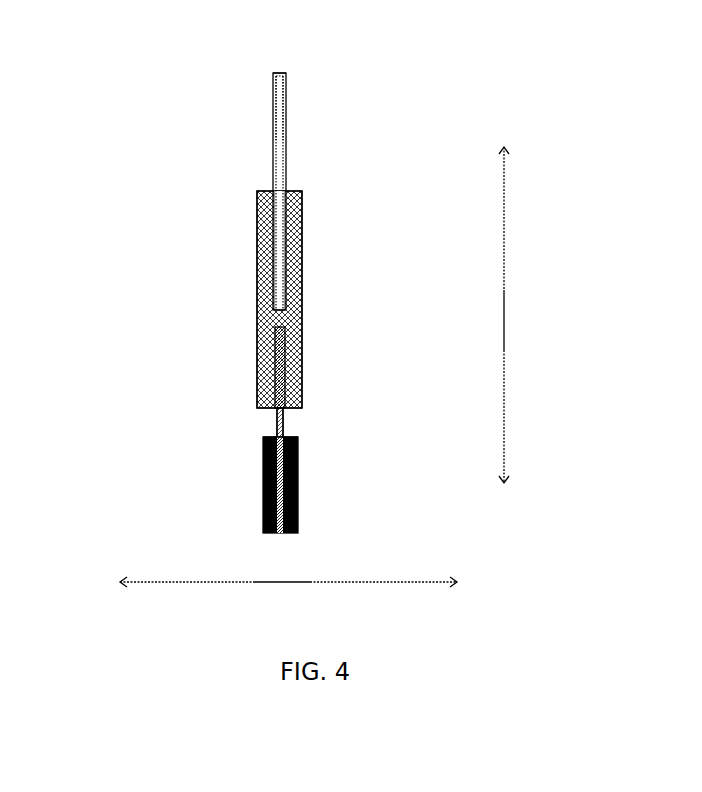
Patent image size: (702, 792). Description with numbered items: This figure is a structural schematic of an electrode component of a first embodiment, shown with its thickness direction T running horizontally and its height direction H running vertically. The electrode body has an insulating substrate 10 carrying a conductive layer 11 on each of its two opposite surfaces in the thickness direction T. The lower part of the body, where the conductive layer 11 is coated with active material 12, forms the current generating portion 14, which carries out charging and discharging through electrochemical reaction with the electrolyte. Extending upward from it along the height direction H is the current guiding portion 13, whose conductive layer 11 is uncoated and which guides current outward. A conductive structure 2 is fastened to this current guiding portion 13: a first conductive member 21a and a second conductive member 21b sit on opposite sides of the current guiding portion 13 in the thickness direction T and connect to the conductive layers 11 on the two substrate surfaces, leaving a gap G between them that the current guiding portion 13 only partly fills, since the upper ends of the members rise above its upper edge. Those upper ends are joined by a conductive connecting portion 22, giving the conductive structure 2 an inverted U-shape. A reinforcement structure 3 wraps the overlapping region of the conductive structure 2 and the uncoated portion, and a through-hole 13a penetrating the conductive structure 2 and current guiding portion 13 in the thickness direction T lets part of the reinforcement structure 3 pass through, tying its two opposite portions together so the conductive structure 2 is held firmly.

The conductive structure 2 is at (287, 140).
The conductive connecting portion 22 is at (281, 73).
The second conductive member 21b is at (285, 82).
The first conductive member 21a is at (276, 129).
The gap G is at (280, 97).
The reinforcement structure 3 is at (260, 323).
The current guiding portion 13 is at (277, 284).
The through-hole 13a is at (280, 318).
The insulating substrate 10 is at (287, 359).
The conductive layer 11 is at (277, 422).
The active material 12 is at (264, 443).
The current generating portion 14 is at (300, 481).
The height direction H is at (493, 315).
The thickness direction T is at (288, 572).